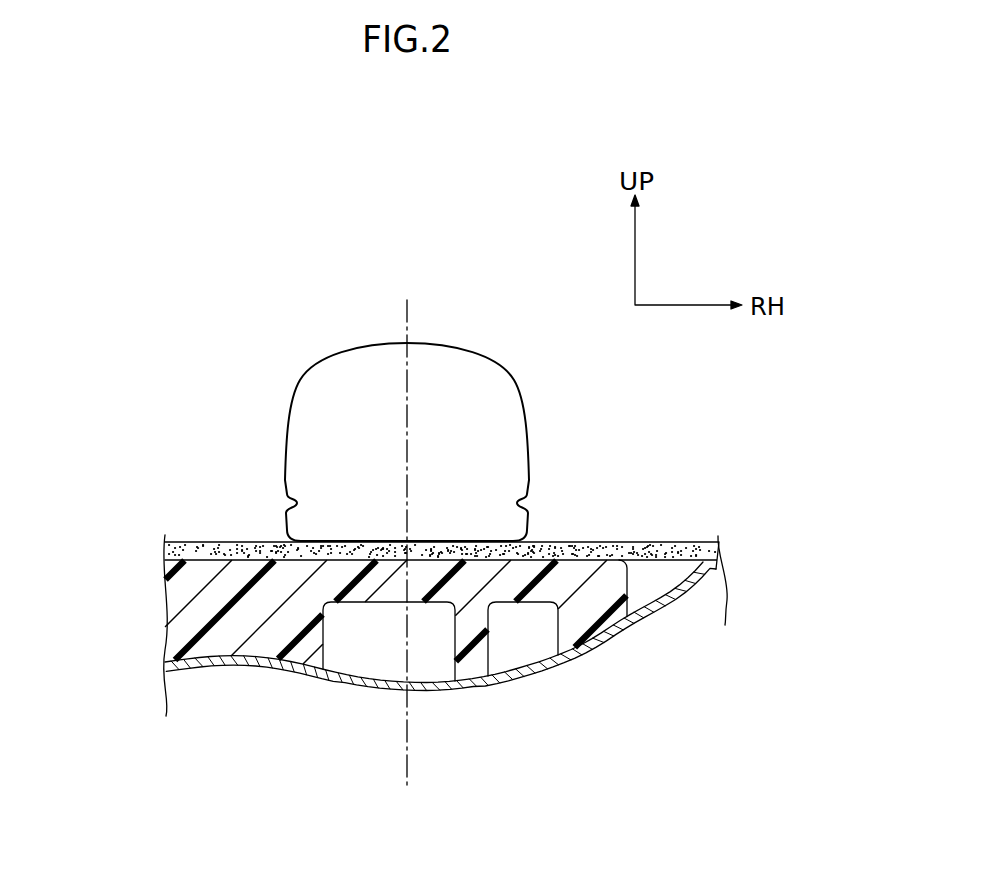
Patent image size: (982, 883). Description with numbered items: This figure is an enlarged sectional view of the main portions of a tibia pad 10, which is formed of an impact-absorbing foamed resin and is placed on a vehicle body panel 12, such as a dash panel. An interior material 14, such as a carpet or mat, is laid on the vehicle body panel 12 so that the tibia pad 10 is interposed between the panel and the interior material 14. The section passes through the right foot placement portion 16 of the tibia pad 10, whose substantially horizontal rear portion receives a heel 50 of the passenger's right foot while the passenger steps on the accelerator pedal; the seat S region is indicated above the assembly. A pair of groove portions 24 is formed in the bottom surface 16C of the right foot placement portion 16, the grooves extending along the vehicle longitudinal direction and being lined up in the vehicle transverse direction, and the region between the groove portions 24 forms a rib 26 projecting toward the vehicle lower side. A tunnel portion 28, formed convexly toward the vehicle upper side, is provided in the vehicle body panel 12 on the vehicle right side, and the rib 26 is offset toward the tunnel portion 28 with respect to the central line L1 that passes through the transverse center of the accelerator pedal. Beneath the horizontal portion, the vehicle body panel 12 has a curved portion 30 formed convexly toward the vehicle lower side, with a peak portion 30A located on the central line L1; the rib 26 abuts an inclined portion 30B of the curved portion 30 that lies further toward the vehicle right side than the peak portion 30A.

The seat S is at (415, 198).
The central line L1 is at (408, 328).
The tibia pad 10 is at (168, 600).
The vehicle body panel 12 is at (200, 668).
The interior material 14 is at (203, 541).
The right foot placement portion 16 is at (628, 580).
The bottom surface 16C is at (587, 652).
The groove portions 24 is at (323, 638).
The rib 26 is at (455, 654).
The tunnel portion 28 is at (663, 597).
The curved portion 30 is at (365, 688).
The peak portion 30A is at (399, 694).
The inclined portion 30B is at (470, 688).
The heel 50 is at (534, 526).